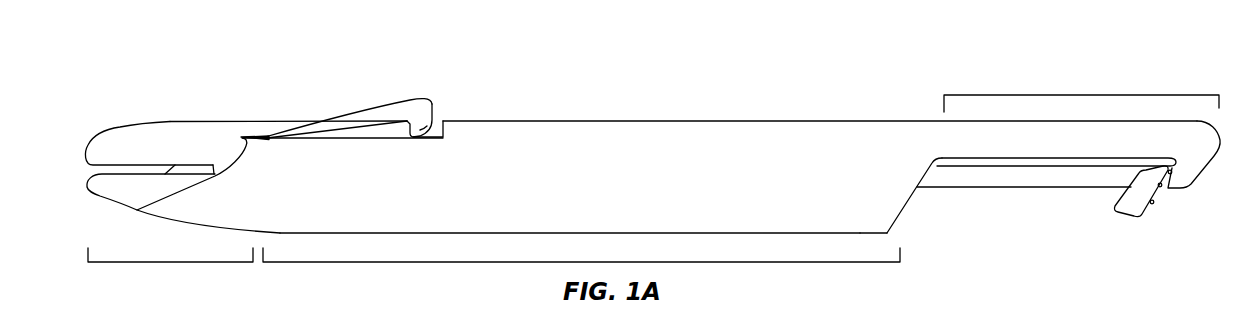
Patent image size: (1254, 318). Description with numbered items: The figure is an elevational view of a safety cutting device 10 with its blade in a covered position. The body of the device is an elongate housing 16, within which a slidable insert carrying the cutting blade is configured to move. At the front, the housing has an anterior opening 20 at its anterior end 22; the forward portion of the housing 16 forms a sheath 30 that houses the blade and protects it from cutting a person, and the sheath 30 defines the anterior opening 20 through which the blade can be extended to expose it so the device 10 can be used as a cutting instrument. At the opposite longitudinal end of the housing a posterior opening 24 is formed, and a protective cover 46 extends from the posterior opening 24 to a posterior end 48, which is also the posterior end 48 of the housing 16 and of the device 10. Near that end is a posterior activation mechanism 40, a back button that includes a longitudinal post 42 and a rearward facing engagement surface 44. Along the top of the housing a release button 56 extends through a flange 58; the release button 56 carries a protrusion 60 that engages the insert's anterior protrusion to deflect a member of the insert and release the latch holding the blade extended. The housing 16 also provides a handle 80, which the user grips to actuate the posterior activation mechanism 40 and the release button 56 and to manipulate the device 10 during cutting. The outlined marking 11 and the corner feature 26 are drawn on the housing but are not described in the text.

The safety cutting device 10 is at (889, 84).
The shaft 11 is at (570, 204).
The elongate housing 16 is at (672, 121).
The anterior opening 20 is at (87, 166).
The anterior end 22 is at (92, 182).
The posterior opening 24 is at (919, 192).
The bottom corner 26 is at (893, 233).
The sheath 30 is at (200, 262).
The posterior activation mechanism 40 is at (1125, 218).
The longitudinal post 42 is at (1017, 188).
The rearward facing engagement surface 44 is at (1160, 197).
The protective cover 46 is at (1092, 93).
The posterior end 48 is at (1195, 177).
The release button 56 is at (368, 112).
The flange 58 is at (231, 120).
The protrusion 60 is at (435, 125).
The handle 80 is at (730, 262).